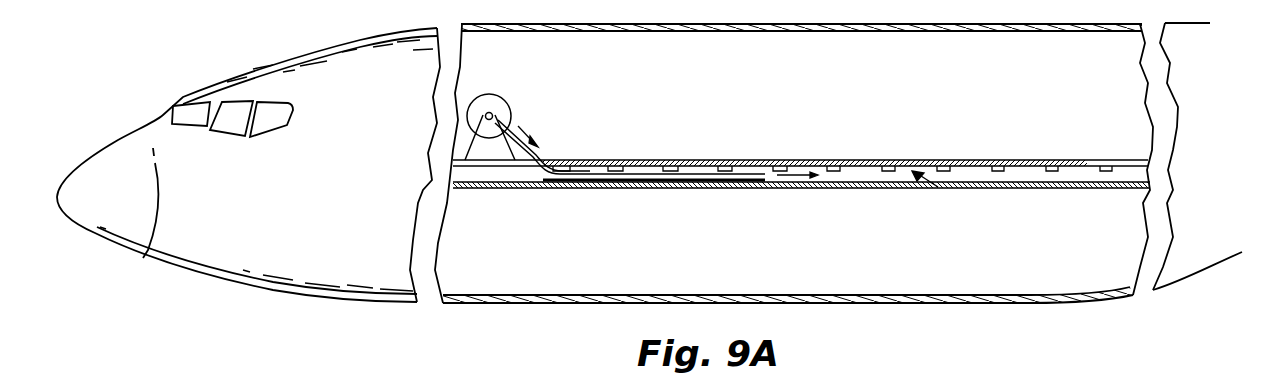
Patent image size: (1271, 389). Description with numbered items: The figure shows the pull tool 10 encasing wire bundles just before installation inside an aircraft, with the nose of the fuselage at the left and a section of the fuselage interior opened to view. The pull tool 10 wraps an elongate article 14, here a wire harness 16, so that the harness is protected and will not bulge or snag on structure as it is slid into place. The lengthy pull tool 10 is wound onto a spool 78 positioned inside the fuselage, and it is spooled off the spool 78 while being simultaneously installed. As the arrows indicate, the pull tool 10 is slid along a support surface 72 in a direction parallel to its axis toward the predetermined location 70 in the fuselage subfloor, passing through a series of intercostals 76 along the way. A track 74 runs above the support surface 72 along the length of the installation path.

The pull tool 10 is at (746, 176).
The elongate article 14 is at (630, 133).
The wire harness 16 is at (590, 173).
The predetermined location 70 is at (937, 188).
The support surface 72 is at (841, 190).
The track 74 is at (1030, 160).
The intercostals 76 is at (724, 163).
The spool 78 is at (491, 96).